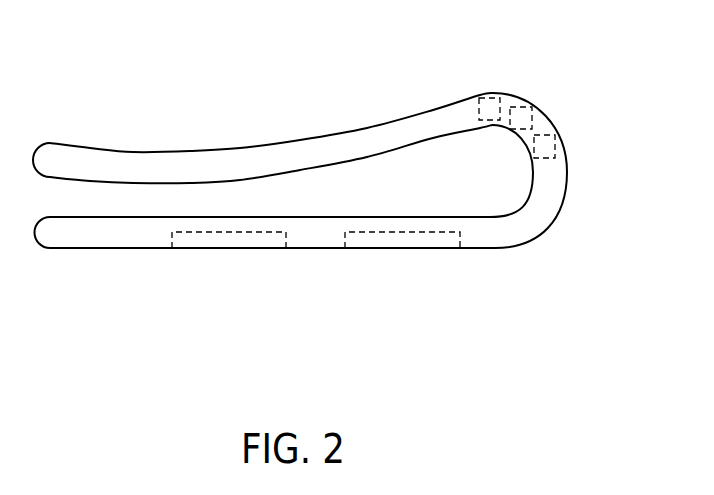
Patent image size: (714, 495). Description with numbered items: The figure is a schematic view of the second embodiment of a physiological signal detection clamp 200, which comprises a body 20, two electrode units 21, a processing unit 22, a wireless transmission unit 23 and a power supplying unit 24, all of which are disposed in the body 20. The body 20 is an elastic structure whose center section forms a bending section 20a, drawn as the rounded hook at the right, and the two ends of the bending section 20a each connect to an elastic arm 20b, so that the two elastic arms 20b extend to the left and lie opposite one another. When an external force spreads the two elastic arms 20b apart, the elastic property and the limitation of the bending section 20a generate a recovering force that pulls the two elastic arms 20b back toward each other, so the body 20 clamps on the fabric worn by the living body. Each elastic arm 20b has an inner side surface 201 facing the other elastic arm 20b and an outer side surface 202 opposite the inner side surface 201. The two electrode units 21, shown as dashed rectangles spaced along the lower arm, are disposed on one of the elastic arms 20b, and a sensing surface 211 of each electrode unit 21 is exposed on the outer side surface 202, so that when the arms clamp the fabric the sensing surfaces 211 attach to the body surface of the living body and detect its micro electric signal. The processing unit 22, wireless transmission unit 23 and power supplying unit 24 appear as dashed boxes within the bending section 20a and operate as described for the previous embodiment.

The physiological signal detection clamp 200 is at (361, 95).
The body 20 is at (573, 343).
The bending section 20a is at (547, 197).
The elastic arm 20b is at (253, 153).
The inner side surface 201 is at (323, 217).
The outer side surface 202 is at (113, 248).
The electrode unit 21 is at (225, 248).
The sensing surface 211 is at (265, 248).
The processing unit 22 is at (489, 98).
The wireless transmission unit 23 is at (520, 112).
The power supplying unit 24 is at (548, 150).